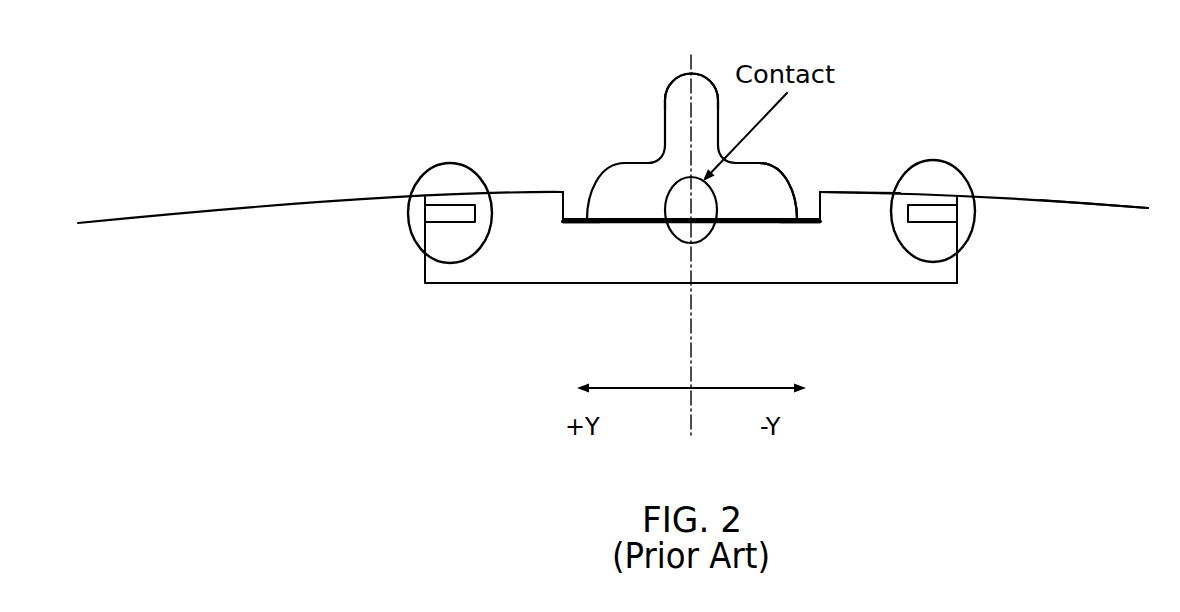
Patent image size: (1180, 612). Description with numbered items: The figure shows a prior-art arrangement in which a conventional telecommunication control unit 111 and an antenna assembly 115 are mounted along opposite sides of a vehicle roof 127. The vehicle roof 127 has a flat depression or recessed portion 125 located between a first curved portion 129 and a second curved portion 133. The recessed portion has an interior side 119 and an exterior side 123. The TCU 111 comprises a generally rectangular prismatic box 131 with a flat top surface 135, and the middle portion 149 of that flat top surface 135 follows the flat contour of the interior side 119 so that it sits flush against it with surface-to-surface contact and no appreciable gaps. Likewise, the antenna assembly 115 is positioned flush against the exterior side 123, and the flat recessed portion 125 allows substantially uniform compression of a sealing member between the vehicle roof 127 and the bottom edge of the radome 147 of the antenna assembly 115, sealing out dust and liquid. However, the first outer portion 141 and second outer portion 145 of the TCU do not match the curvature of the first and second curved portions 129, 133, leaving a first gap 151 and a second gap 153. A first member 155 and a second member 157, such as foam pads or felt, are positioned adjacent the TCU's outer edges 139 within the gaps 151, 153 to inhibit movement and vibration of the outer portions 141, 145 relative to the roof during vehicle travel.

The telecommunication control unit 111 is at (452, 283).
The antenna assembly 115 is at (630, 162).
The interior side 119 is at (580, 223).
The exterior side 123 is at (572, 213).
The flat depression or recessed portion 125 is at (803, 217).
The vehicle roof 127 is at (1085, 205).
The first curved portion 129 is at (142, 213).
The generally rectangular prismatic box 131 is at (905, 283).
The second curved portion 133 is at (1113, 202).
The flat top surface 135 is at (838, 218).
The outer edges 139 is at (408, 215).
The first outer portion 141 is at (537, 215).
The second outer portion 145 is at (867, 218).
The radome 147 is at (675, 77).
The middle portion 149 is at (790, 223).
The first gap 151 is at (435, 161).
The second gap 153 is at (938, 178).
The first member 155 is at (480, 222).
The second member 157 is at (946, 224).